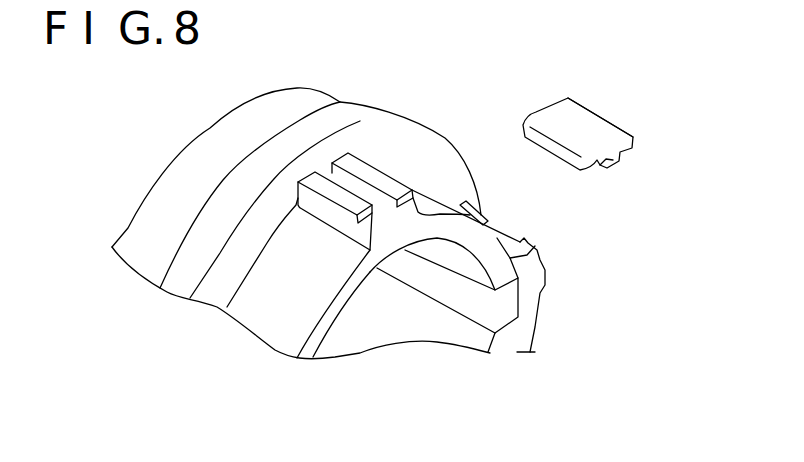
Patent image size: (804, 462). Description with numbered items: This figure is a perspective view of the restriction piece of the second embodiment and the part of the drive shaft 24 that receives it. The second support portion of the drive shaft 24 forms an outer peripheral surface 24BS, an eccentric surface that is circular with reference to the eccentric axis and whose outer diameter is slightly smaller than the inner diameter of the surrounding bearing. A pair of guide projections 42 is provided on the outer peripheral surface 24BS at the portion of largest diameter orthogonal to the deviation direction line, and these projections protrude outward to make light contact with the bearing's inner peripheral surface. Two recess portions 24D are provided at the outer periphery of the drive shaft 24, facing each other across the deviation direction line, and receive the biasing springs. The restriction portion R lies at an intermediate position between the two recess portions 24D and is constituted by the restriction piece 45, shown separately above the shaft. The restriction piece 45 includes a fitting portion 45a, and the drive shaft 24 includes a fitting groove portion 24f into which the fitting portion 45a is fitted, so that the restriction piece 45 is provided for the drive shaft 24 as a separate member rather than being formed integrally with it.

The drive shaft 24 is at (175, 156).
The recess portions 24D is at (485, 223).
The fitting groove portion 24f is at (357, 183).
The outer peripheral surface 24BS is at (540, 304).
The guide projections 42 is at (542, 273).
The restriction piece 45 is at (556, 112).
The fitting portion 45a is at (613, 168).
The restriction portion R is at (604, 117).